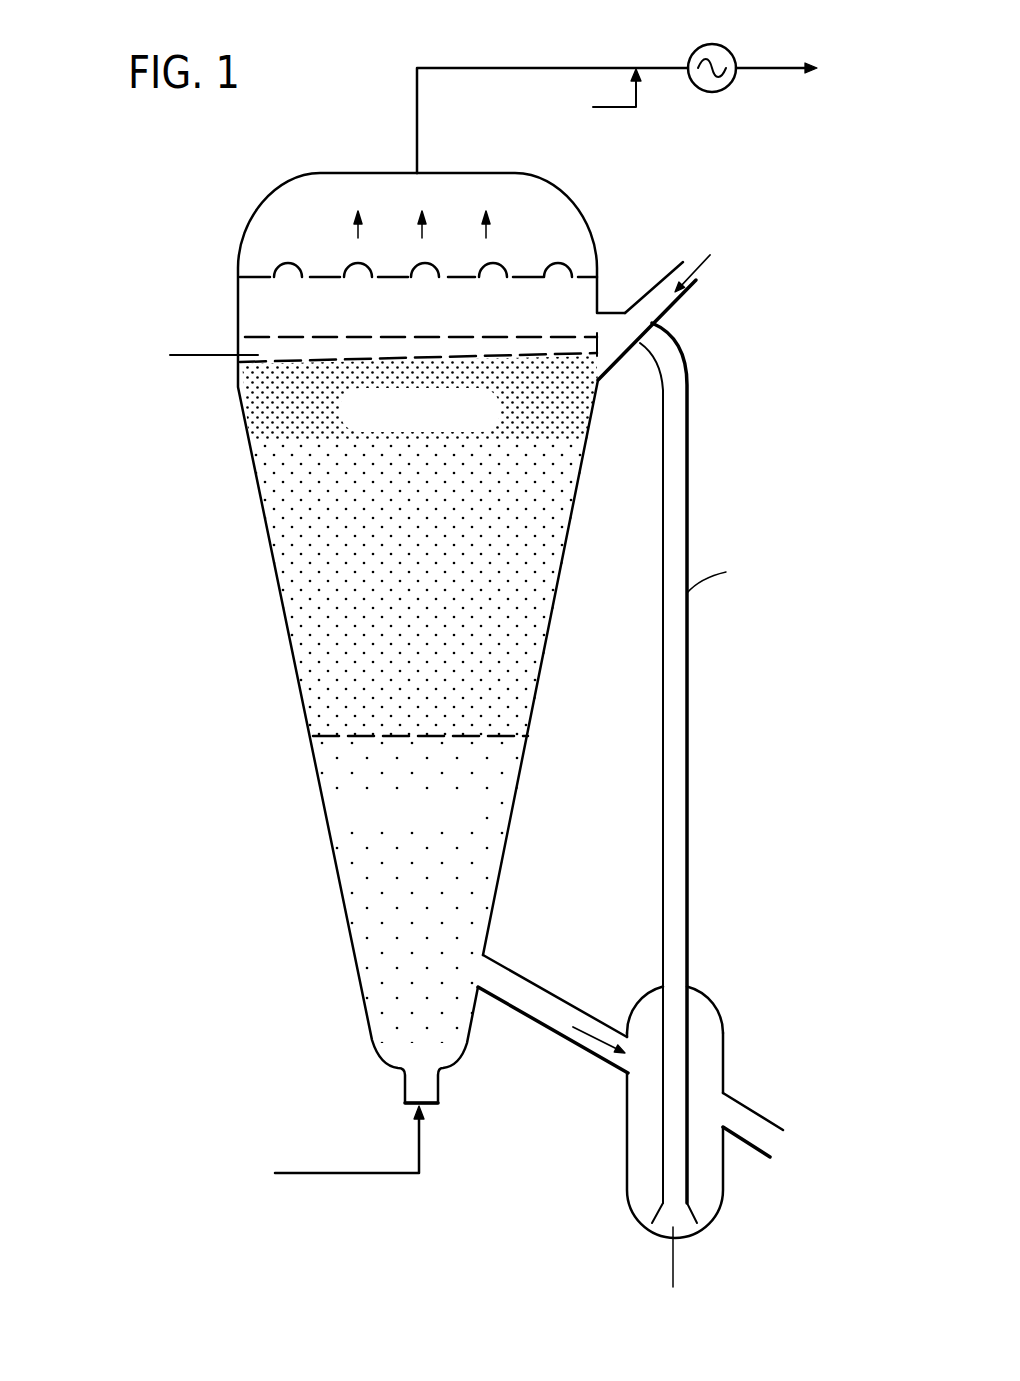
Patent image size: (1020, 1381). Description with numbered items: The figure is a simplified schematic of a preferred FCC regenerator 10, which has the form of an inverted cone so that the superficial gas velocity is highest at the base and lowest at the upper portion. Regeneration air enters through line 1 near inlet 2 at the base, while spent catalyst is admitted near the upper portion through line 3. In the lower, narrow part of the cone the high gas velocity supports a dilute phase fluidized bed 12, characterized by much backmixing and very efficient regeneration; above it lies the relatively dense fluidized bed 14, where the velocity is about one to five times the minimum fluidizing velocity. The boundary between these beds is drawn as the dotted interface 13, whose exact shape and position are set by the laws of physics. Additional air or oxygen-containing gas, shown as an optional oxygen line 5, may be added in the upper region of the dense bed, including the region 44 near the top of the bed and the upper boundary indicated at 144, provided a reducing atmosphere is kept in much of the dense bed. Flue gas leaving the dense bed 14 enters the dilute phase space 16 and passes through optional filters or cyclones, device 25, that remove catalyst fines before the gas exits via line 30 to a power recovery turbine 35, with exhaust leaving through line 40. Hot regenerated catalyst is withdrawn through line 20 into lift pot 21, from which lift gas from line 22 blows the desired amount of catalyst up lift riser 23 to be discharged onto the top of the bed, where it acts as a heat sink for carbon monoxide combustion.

The line 1 is at (342, 1177).
The inlet 2 is at (438, 1093).
The line 3 is at (674, 300).
The optional oxygen inlet line 5 is at (207, 358).
The FCC regenerator 10 is at (268, 538).
The dilute phase fluidized bed 12 is at (370, 854).
The interface 13 is at (355, 737).
The dense fluidized bed 14 is at (316, 653).
The dilute phase space 16 is at (255, 306).
The line 20 is at (493, 957).
The lift pot 21 is at (723, 1012).
The line 22 is at (674, 1258).
The lift riser 23 is at (687, 718).
The device 25 is at (257, 276).
The line 30 is at (612, 66).
The power recovery turbine 35 is at (696, 87).
The line 40 is at (760, 70).
The dense bed region near wall 44 is at (283, 363).
The upper dense bed boundary 144 is at (265, 337).